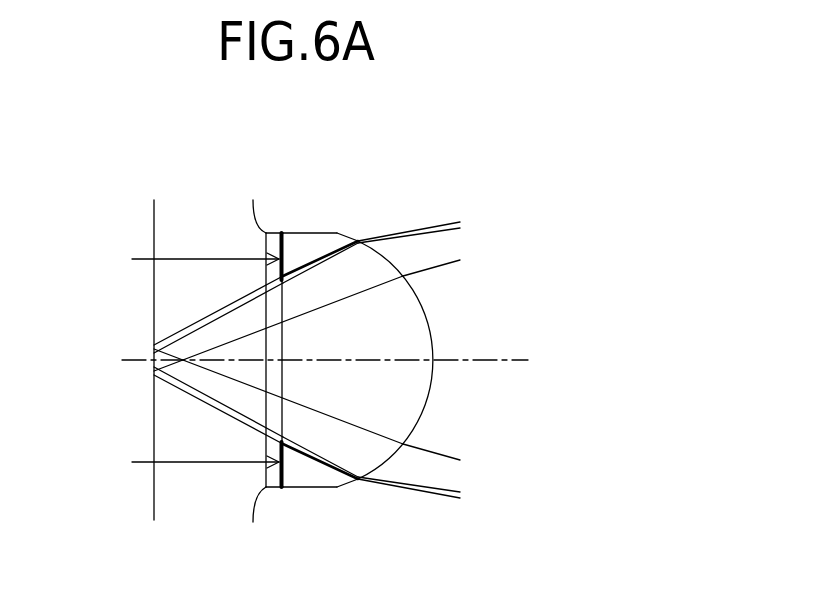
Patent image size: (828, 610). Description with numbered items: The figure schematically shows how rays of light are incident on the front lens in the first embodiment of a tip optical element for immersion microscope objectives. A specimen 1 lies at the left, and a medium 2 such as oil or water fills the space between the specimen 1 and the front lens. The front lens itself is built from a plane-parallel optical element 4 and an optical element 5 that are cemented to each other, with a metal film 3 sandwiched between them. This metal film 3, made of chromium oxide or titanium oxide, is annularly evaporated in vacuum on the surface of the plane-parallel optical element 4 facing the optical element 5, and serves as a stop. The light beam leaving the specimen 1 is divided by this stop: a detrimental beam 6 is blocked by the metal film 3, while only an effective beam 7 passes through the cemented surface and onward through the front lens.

The specimen 1 is at (153, 505).
The medium 2 is at (183, 237).
The metal film 3 is at (288, 484).
The plane-parallel optical element 4 is at (273, 237).
The optical element 5 is at (334, 488).
The detrimental beam 6 is at (140, 260).
The effective beam 7 is at (414, 228).